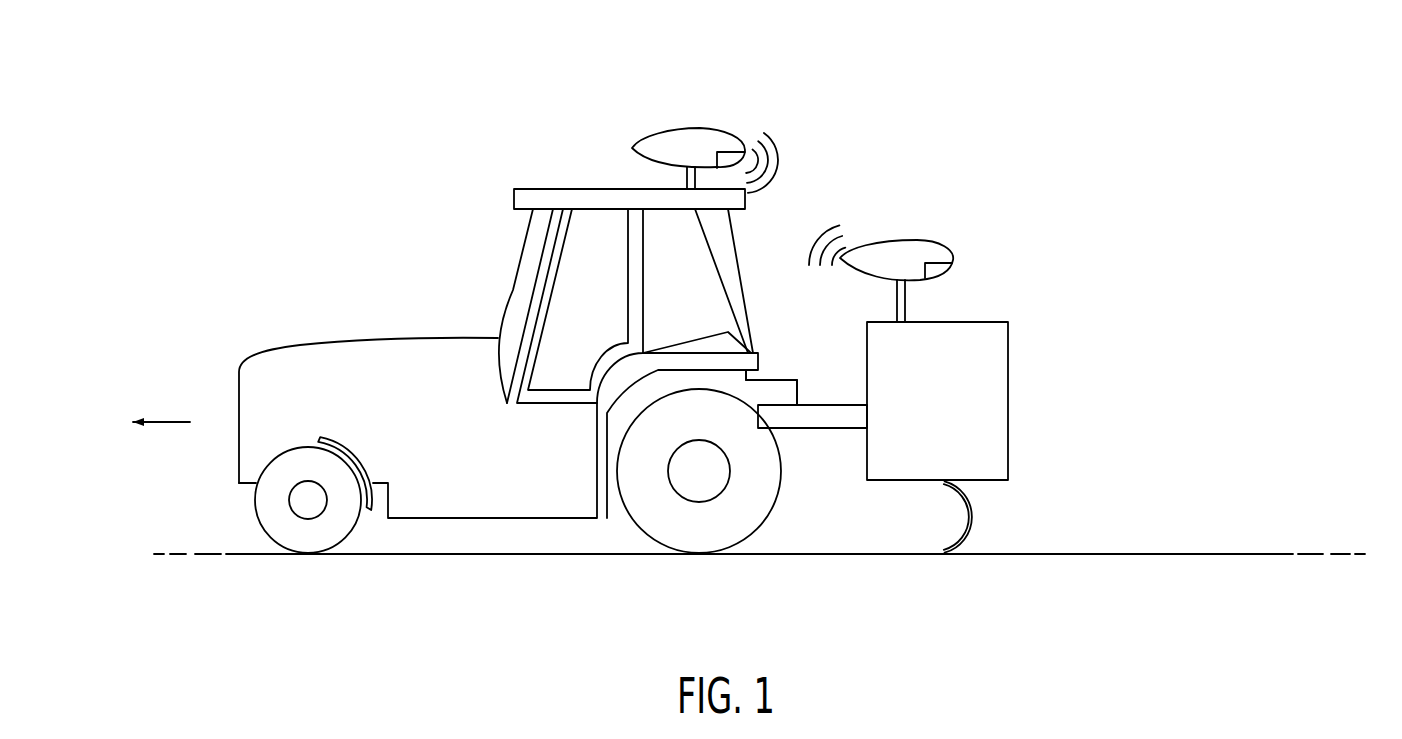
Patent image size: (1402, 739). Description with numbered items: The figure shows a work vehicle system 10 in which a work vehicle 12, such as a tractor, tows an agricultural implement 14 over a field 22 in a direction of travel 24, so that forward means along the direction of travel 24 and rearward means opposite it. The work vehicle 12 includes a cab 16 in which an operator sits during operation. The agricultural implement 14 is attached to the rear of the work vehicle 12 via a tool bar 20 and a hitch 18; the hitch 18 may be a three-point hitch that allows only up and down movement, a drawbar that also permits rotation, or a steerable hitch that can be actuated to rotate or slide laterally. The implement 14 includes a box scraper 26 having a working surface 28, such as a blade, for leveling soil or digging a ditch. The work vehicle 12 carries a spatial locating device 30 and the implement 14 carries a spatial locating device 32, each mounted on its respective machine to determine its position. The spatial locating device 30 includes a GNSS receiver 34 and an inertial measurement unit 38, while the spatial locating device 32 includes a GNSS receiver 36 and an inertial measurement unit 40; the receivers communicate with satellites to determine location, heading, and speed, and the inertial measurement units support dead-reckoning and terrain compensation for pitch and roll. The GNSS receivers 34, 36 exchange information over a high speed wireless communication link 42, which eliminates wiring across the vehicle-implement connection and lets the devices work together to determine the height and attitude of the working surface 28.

The work vehicle system 10 is at (948, 210).
The work vehicle 12 is at (400, 252).
The agricultural implement 14 is at (1128, 232).
The cab 16 is at (599, 310).
The hitch 18 is at (797, 393).
The tool bar 20 is at (833, 405).
The field 22 is at (1048, 555).
The direction of travel 24 is at (168, 422).
The box scraper 26 is at (1008, 402).
The working surface 28 is at (970, 515).
The spatial locating device 30 is at (690, 103).
The spatial locating device 32 is at (953, 238).
The GNSS receiver 34 is at (723, 131).
The GNSS receiver 36 is at (883, 243).
The inertial measurement unit 38 is at (738, 148).
The inertial measurement unit 40 is at (952, 270).
The communication link 42 is at (795, 205).